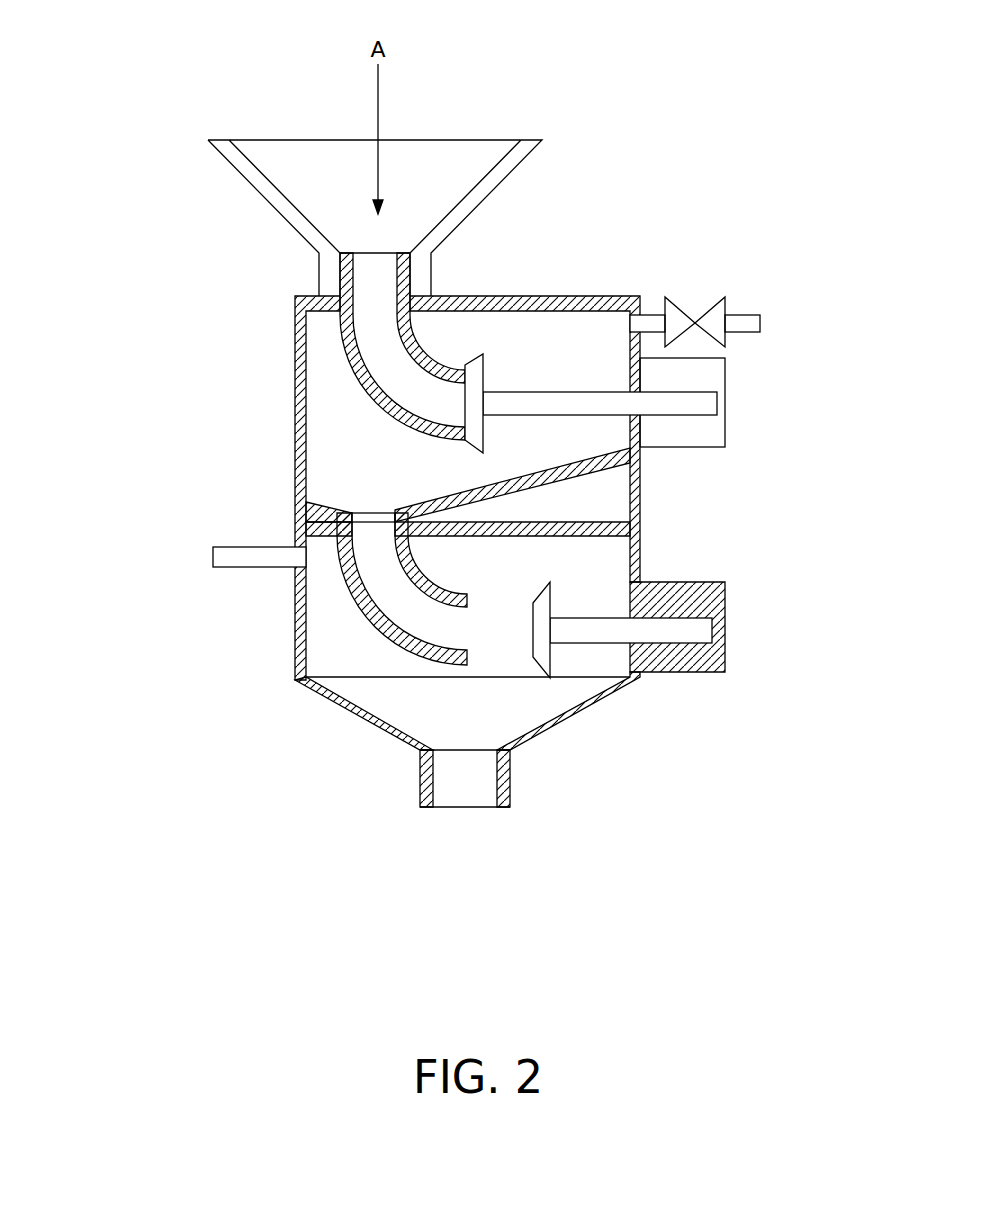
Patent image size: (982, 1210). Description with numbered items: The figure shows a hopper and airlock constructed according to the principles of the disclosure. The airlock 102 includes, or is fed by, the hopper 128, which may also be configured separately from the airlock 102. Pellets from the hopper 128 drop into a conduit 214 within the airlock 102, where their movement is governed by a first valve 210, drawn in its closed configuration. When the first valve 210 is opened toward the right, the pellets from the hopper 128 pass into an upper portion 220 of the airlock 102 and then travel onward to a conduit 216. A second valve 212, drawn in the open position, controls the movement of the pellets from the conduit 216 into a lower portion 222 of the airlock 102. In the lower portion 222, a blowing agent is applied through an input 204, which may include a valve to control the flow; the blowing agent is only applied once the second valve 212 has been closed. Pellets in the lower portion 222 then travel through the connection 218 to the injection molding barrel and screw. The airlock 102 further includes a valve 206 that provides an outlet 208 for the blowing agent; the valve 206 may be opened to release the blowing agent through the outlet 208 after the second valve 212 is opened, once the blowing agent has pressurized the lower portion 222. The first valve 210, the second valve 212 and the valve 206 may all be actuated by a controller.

The airlock 102 is at (717, 120).
The hopper 128 is at (503, 181).
The input 204 is at (190, 557).
The valve 206 is at (678, 320).
The outlet 208 is at (745, 325).
The first valve 210 is at (593, 403).
The second valve 212 is at (657, 632).
The conduit 214 is at (347, 350).
The conduit 216 is at (363, 610).
The connection 218 is at (500, 803).
The upper portion 220 is at (523, 333).
The lower portion 222 is at (587, 563).